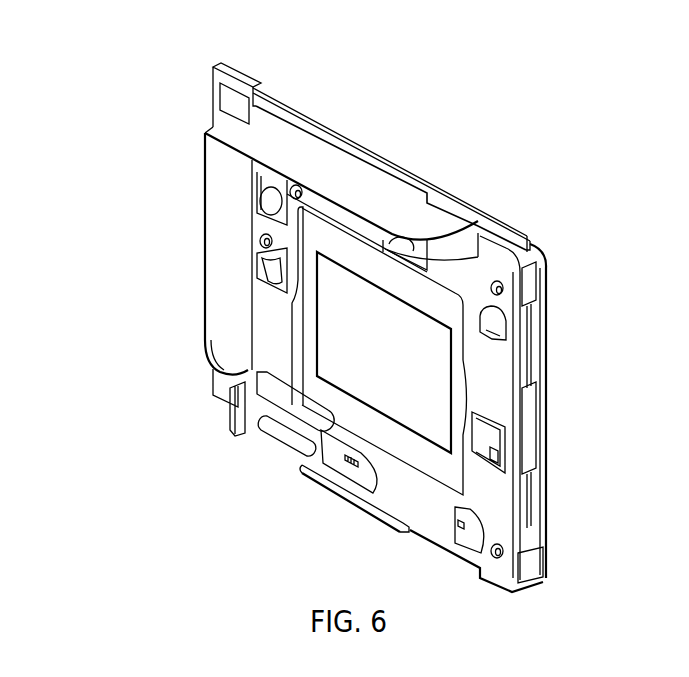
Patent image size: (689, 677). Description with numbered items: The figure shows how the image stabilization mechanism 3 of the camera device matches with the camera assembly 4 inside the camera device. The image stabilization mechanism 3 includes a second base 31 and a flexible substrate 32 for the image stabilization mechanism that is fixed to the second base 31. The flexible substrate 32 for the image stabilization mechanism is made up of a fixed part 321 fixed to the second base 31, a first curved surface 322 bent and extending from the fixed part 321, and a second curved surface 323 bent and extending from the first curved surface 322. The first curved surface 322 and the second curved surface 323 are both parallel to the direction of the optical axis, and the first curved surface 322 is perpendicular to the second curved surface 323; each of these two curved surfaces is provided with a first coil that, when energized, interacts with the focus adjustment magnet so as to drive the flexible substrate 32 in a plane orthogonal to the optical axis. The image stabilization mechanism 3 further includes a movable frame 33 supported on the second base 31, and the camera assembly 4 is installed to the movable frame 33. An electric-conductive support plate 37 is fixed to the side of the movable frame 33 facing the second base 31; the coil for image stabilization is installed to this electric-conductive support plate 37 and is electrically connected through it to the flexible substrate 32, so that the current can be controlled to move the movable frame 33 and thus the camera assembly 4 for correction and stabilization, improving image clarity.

The image stabilization mechanism 3 is at (86, 53).
The second base 31 is at (213, 67).
The flexible substrate for the image stabilization mechanism 32 is at (124, 75).
The fixed part 321 is at (230, 110).
The second curved surface 323 is at (270, 124).
The first curved surface 322 is at (225, 168).
The movable frame 33 is at (303, 328).
The electric-conductive support plate 37 is at (258, 379).
The camera assembly 4 is at (378, 358).